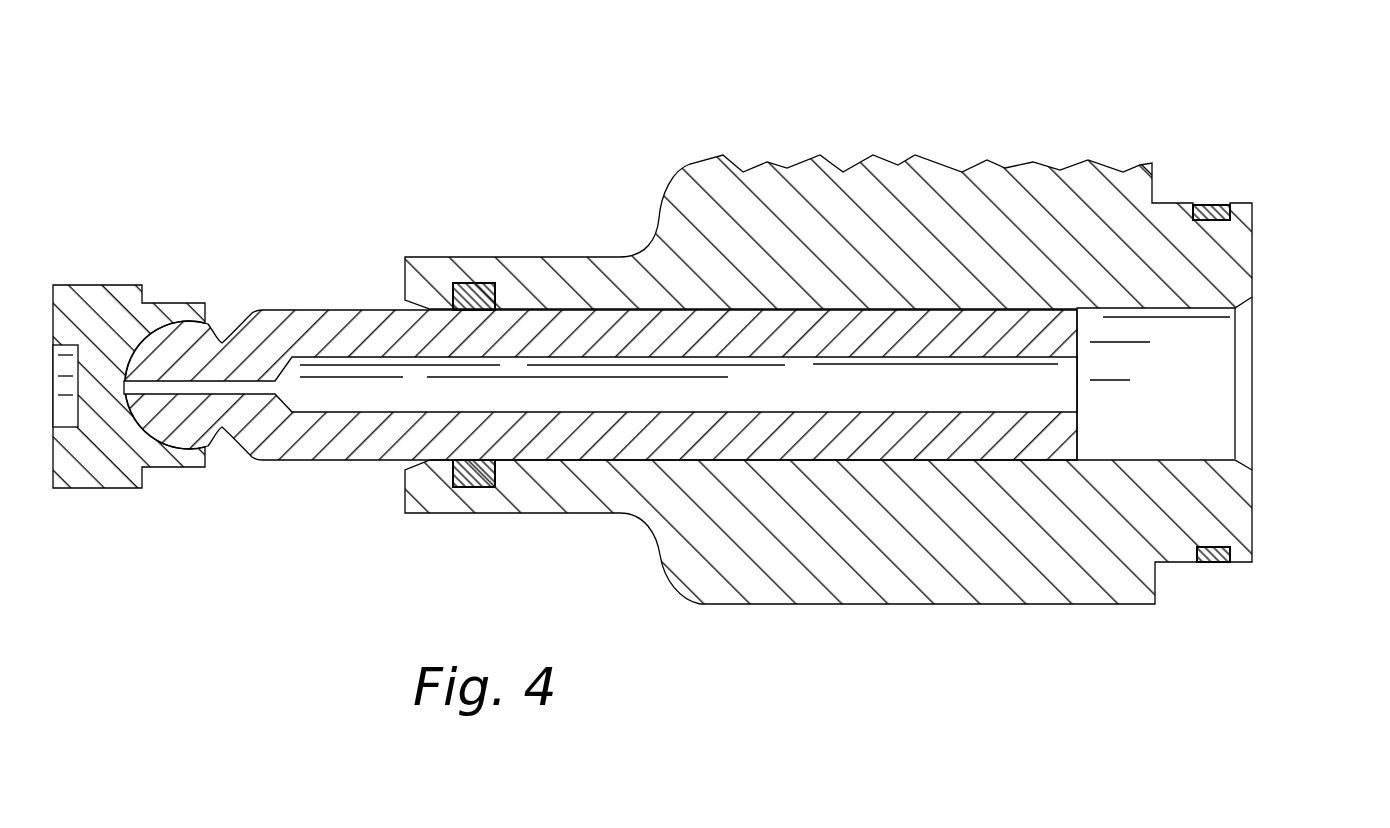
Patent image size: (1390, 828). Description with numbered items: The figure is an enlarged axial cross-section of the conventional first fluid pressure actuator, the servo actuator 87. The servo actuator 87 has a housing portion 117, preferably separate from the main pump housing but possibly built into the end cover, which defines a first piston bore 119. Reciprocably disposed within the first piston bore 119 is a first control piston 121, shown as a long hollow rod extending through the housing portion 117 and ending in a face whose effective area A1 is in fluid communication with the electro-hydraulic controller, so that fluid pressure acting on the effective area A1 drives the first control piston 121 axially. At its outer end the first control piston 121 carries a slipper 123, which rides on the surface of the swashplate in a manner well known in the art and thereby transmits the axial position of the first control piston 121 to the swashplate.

The servo actuator 87 is at (559, 163).
The housing portion 117 is at (1043, 180).
The first piston bore 119 is at (1172, 309).
The first control piston 121 is at (342, 452).
The slipper 123 is at (107, 292).
The effective area A1 is at (1080, 437).